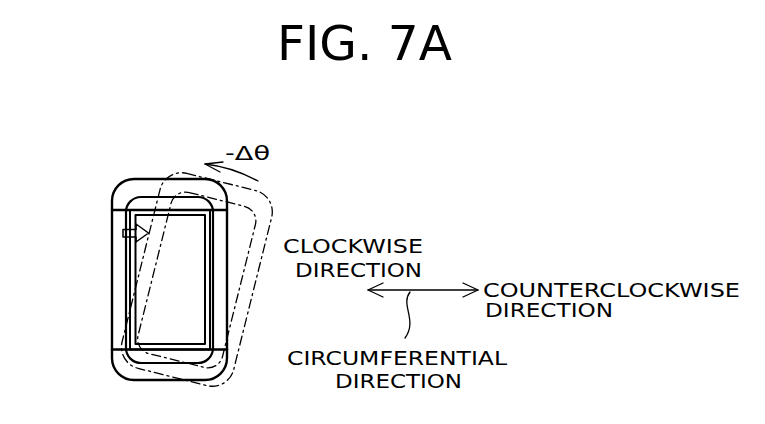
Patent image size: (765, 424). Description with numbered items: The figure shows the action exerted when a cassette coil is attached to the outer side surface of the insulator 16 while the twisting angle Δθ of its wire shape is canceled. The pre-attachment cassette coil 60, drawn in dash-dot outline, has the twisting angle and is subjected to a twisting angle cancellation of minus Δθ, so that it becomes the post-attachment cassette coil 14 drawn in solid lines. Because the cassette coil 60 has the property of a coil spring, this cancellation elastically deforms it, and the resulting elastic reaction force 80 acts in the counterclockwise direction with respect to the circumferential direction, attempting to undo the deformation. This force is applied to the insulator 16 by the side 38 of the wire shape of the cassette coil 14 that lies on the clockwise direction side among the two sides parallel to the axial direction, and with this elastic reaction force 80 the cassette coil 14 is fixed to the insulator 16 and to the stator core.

The post-attachment cassette coil 14 is at (133, 179).
The insulator 16 is at (130, 264).
The side 38 is at (120, 304).
The pre-attachment cassette coil 60 is at (272, 216).
The elastic reaction force 80 is at (123, 233).